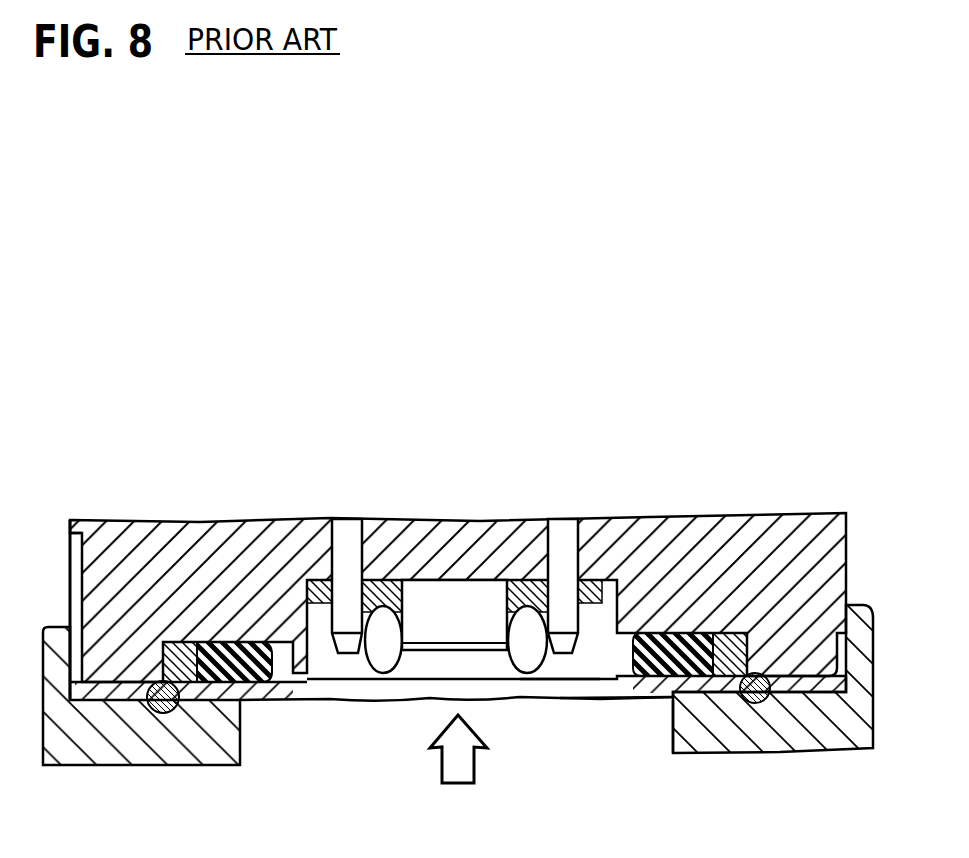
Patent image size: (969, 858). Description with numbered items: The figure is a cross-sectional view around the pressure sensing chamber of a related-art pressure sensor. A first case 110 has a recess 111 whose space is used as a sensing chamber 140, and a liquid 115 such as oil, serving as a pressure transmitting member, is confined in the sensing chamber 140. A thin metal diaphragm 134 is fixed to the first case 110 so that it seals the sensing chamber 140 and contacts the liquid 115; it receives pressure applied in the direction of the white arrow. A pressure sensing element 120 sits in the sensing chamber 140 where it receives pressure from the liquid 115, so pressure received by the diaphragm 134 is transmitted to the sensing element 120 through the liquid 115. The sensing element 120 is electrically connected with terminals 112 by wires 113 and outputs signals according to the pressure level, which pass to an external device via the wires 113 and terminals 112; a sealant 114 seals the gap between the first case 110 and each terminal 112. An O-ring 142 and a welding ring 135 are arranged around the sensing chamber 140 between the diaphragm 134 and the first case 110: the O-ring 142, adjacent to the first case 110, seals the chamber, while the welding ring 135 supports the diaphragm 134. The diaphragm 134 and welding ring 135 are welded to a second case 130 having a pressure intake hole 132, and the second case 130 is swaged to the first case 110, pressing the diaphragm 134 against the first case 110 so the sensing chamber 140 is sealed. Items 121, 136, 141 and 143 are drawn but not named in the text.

The first case 110 is at (800, 540).
The recess 111 is at (557, 700).
The terminal 112 is at (345, 522).
The wire 113 is at (386, 674).
The sealant 114 is at (397, 580).
The liquid 115 is at (543, 688).
The pressure sensing element 120 is at (480, 647).
The valve body 121 is at (448, 583).
The second case 130 is at (789, 707).
The pressure intake hole 132 is at (647, 723).
The metal diaphragm 134 is at (578, 691).
The welding ring 135 is at (191, 684).
The O-ring 136 is at (146, 702).
The sensing chamber 140 is at (332, 680).
The side wall 141 is at (269, 522).
The O-ring 142 is at (680, 640).
The retainer ring 143 is at (724, 633).